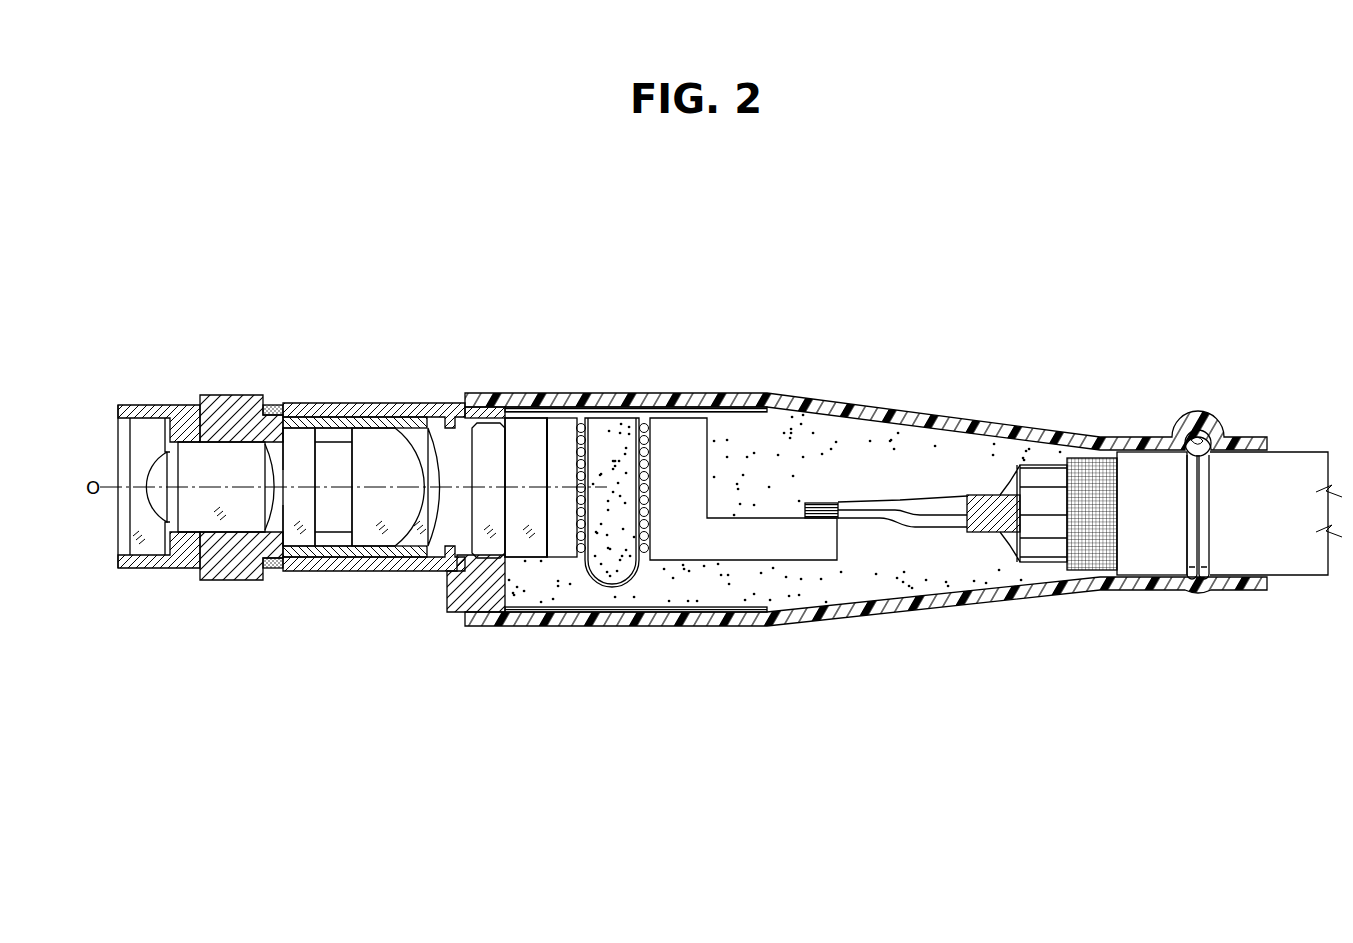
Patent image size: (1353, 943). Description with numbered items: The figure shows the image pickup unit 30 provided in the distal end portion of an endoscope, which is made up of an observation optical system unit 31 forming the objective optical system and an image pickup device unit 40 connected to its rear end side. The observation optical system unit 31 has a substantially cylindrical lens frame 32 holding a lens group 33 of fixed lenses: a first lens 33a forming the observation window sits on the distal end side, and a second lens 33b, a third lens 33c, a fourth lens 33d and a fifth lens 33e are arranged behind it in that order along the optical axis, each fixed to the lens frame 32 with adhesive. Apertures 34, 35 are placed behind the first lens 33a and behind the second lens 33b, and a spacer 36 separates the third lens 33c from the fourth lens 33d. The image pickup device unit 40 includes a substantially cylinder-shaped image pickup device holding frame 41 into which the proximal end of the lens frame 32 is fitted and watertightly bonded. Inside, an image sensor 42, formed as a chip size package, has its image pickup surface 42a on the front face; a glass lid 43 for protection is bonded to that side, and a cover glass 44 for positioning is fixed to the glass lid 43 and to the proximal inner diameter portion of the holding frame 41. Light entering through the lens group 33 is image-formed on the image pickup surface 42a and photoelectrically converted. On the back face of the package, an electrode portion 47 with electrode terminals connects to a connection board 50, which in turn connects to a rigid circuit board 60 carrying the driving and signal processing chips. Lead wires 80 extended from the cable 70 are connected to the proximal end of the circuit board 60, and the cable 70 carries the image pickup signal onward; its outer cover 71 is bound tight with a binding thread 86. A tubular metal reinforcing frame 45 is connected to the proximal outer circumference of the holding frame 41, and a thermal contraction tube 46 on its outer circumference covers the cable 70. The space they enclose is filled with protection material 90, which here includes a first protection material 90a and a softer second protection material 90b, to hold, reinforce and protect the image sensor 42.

The image pickup unit 30 is at (668, 276).
The observation optical system unit 31 is at (197, 371).
The lens frame 32 is at (235, 407).
The lens group 33 is at (128, 648).
The first lens 33a is at (153, 546).
The second lens 33b is at (235, 518).
The third lens 33c is at (300, 538).
The fourth lens 33d is at (366, 534).
The fifth lens 33e is at (425, 536).
The aperture 34 is at (165, 460).
The aperture 35 is at (287, 460).
The spacer 36 is at (333, 436).
The image pickup device unit 40 is at (497, 352).
The image pickup device holding frame 41 is at (423, 403).
The image sensor 42 is at (567, 417).
The image pickup surface 42a is at (545, 468).
The glass lid 43 is at (521, 514).
The cover glass 44 is at (492, 560).
The reinforcing frame 45 is at (672, 613).
The thermal contraction tube 46 is at (973, 604).
The electrode portion 47 is at (580, 420).
The connection board 50 is at (607, 596).
The circuit board 60 is at (758, 570).
The cable 70 is at (1298, 436).
The outer cover 71 is at (1145, 549).
The lead wires 80 is at (892, 528).
The binding thread 86 is at (1192, 513).
The protection material 90 is at (640, 328).
The first protection material 90a is at (737, 445).
The second protection material 90b is at (625, 437).